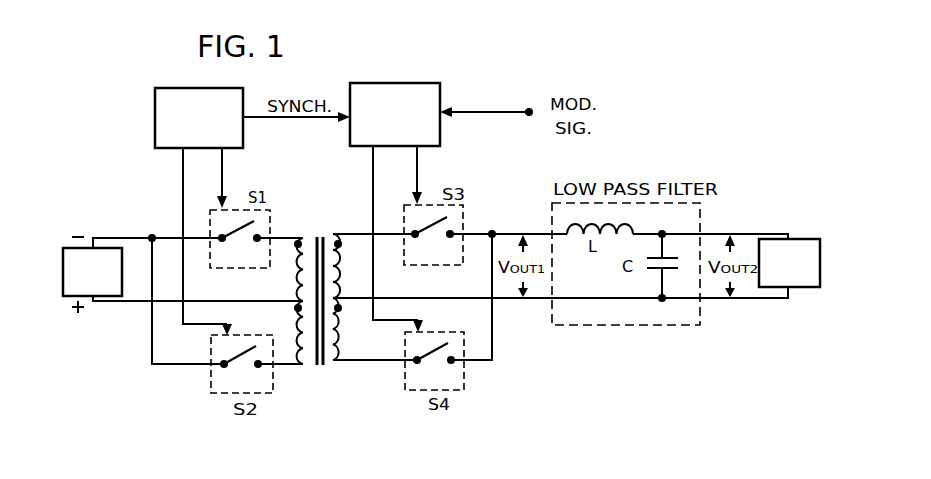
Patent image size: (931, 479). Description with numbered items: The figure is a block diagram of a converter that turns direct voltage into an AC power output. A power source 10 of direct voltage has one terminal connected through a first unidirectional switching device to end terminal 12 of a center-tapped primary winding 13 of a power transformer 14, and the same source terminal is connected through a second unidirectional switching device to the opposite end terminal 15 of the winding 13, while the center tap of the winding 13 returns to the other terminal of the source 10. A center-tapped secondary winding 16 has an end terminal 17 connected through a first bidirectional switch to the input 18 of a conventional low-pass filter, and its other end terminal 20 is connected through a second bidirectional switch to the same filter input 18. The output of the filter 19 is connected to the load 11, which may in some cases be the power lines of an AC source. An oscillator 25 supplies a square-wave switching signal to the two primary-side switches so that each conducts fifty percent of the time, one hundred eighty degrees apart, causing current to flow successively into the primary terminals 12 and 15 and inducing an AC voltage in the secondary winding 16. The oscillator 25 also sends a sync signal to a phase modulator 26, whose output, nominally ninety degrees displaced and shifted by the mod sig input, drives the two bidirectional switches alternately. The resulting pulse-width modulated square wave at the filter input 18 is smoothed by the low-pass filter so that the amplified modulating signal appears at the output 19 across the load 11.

The power source 10 is at (63, 283).
The load means 11 is at (821, 246).
The end terminal 12 is at (303, 238).
The center-tapped primary winding 13 is at (301, 284).
The power transformer 14 is at (320, 378).
The opposite end terminal 15 is at (303, 366).
The center-tapped secondary winding 16 is at (337, 284).
The end terminal 17 is at (333, 236).
The input 18 is at (552, 228).
The output of filter 19 is at (700, 230).
The other end terminal 20 is at (338, 363).
The oscillator 25 is at (240, 149).
The phase modulator 26 is at (406, 83).